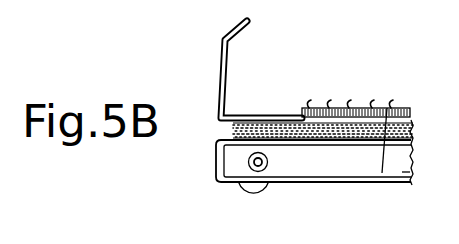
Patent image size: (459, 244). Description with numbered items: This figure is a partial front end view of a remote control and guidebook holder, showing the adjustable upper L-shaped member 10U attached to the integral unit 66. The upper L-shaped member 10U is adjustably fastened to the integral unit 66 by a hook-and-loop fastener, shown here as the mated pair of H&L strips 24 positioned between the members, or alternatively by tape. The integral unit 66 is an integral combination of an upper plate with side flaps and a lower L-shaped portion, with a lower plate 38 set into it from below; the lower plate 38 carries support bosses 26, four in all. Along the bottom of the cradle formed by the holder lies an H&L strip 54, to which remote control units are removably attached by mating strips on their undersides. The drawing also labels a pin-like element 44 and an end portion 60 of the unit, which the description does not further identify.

The upper L-shaped member 10U is at (218, 78).
The mated pair of H&L strips 24 is at (342, 140).
The support bosses 26 is at (262, 196).
The lower plate 38 is at (389, 106).
The pivot pin 44 is at (268, 164).
The H&L strip 54 is at (350, 108).
The end portion 60 is at (407, 172).
The integral unit 66 is at (192, 153).